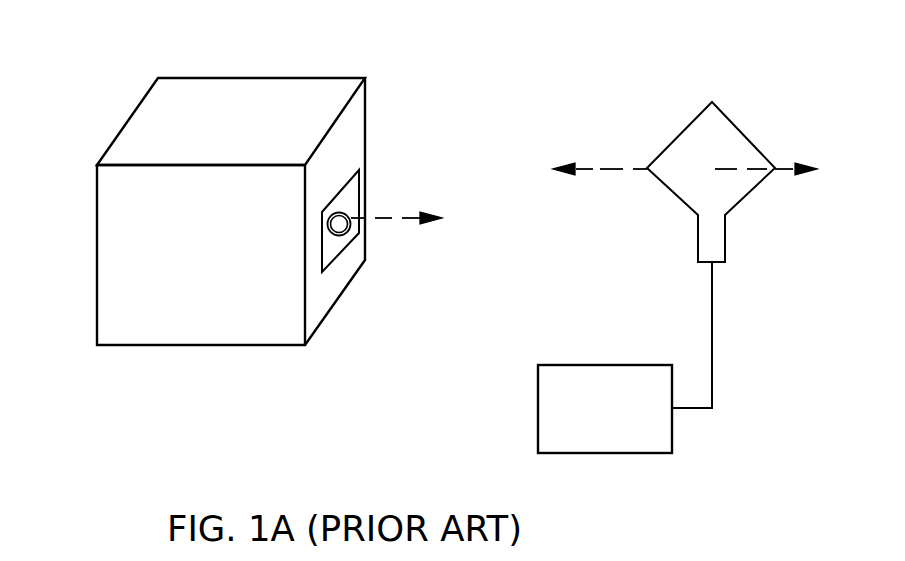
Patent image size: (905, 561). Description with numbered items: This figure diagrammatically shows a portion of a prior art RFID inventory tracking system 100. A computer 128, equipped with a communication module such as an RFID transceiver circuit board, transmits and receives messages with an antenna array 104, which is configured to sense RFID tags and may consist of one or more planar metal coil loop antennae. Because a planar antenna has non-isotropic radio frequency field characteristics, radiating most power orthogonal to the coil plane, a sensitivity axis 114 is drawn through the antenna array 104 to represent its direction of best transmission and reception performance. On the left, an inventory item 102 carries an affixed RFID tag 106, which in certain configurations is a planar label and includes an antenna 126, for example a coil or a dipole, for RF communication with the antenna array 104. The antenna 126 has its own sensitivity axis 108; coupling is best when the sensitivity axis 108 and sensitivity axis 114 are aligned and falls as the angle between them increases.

The RFID inventory tracking system 100 is at (461, 48).
The inventory item 102 is at (155, 345).
The antenna array 104 is at (695, 130).
The RFID tag 106 is at (349, 232).
The sensitivity axis 108 is at (395, 216).
The sensitivity axis 114 is at (603, 151).
The antenna 126 is at (338, 236).
The computer 128 is at (521, 402).